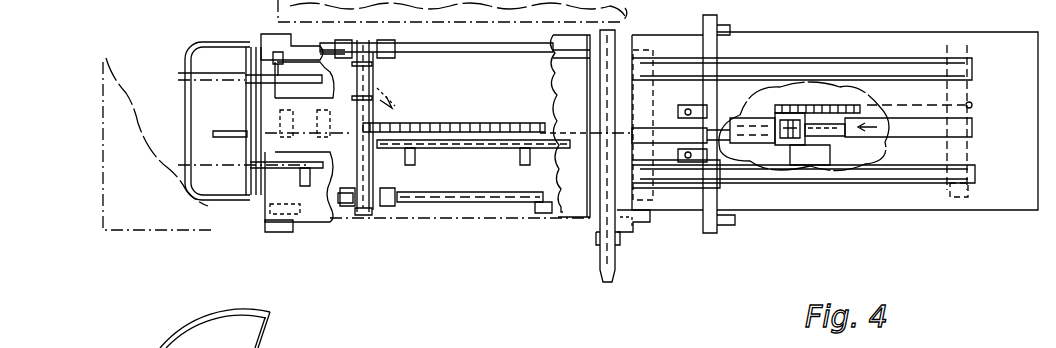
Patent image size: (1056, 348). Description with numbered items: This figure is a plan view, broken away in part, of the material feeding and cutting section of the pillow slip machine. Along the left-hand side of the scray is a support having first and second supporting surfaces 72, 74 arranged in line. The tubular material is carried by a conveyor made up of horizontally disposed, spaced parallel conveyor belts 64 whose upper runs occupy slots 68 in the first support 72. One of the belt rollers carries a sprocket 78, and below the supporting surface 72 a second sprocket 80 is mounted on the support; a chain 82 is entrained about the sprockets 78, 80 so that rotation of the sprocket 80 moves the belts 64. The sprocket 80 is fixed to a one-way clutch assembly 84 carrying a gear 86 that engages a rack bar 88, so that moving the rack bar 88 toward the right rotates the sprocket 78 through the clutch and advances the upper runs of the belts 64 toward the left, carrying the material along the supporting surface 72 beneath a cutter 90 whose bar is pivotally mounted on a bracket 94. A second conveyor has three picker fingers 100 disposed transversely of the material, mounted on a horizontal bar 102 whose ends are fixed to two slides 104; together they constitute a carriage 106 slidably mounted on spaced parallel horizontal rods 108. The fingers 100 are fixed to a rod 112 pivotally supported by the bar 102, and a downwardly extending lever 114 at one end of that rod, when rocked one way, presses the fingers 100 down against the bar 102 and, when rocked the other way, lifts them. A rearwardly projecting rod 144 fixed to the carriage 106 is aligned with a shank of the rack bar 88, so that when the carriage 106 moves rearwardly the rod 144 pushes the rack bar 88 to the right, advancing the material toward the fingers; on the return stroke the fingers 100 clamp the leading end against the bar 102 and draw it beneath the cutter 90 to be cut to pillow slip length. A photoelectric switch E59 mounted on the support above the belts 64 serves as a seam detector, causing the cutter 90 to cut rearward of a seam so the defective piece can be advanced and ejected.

The conveyor belts 64 is at (930, 172).
The slots 68 is at (878, 185).
The first supporting surface 72 is at (1022, 202).
The second supporting surface 74 is at (568, 208).
The sprocket 78 is at (974, 104).
The second sprocket 80 is at (785, 140).
The chain 82 is at (820, 110).
The one-way clutch assembly 84 is at (832, 141).
The gear 86 is at (795, 146).
The rack bar 88 is at (765, 145).
The cutter 90 is at (604, 222).
The bracket 94 is at (627, 224).
The photoelectric switch E59 is at (683, 105).
The picker fingers 100 is at (376, 67).
The bar 102 is at (374, 177).
The slides 104 is at (365, 46).
The carriage 106 is at (388, 110).
The rods 108 is at (472, 50).
The rod 112 is at (352, 204).
The lever 114 is at (375, 210).
The rod 144 is at (437, 130).